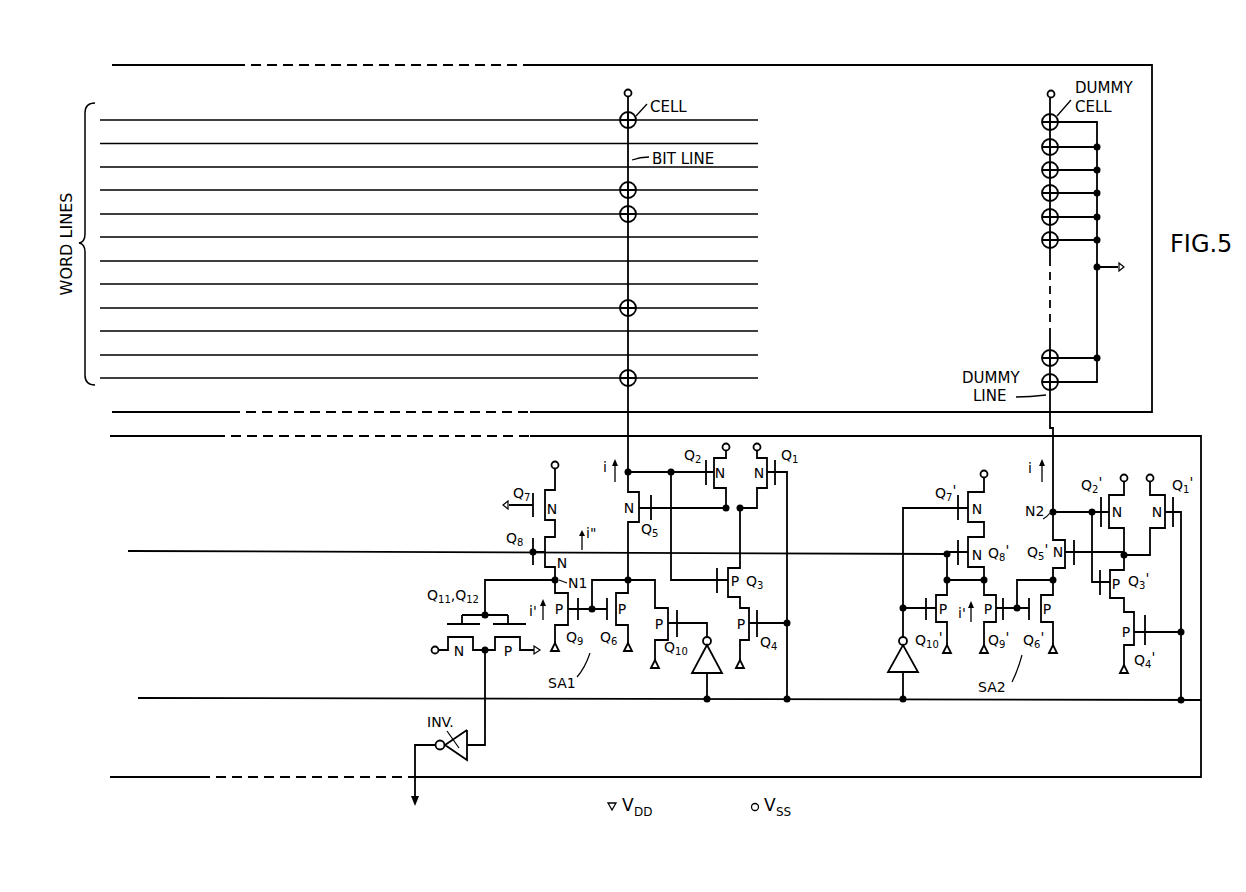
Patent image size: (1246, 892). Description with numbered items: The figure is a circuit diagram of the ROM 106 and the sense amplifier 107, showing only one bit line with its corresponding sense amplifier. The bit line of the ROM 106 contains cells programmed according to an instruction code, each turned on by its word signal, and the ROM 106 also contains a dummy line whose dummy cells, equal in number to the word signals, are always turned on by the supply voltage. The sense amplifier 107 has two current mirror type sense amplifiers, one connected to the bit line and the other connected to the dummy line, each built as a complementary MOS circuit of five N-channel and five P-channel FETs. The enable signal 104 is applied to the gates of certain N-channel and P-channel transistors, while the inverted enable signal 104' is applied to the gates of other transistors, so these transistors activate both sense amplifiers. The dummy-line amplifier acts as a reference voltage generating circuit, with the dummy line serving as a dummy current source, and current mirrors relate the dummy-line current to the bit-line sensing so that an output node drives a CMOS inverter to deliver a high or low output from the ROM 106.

The enable signal 104 is at (690, 692).
The inverted enable signal 104' is at (817, 603).
The ROM 106 is at (900, 72).
The sense amplifier 107 is at (1158, 441).